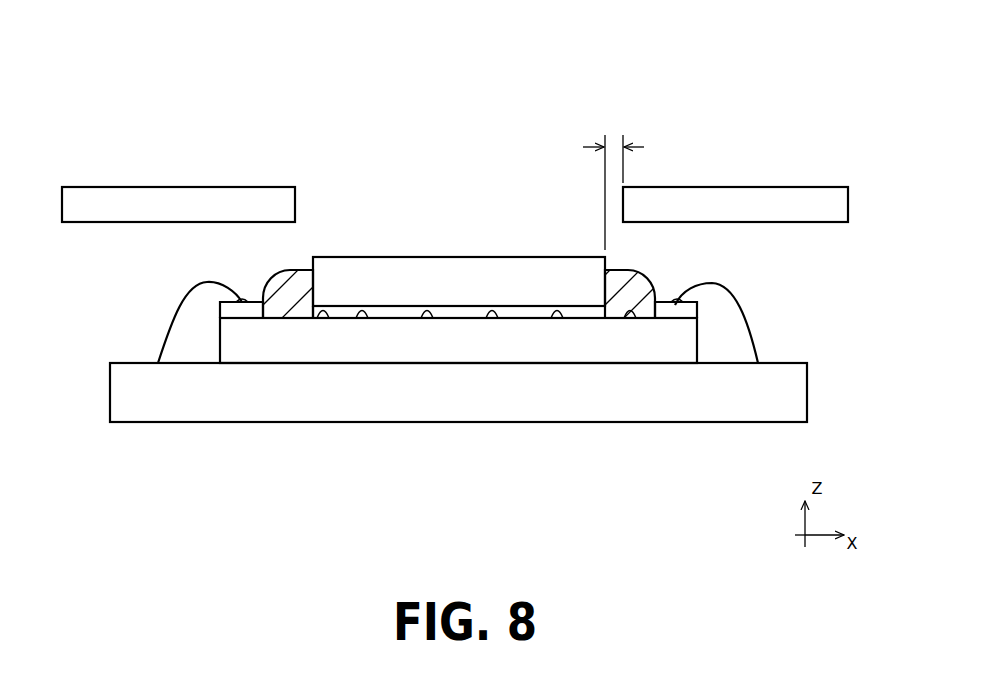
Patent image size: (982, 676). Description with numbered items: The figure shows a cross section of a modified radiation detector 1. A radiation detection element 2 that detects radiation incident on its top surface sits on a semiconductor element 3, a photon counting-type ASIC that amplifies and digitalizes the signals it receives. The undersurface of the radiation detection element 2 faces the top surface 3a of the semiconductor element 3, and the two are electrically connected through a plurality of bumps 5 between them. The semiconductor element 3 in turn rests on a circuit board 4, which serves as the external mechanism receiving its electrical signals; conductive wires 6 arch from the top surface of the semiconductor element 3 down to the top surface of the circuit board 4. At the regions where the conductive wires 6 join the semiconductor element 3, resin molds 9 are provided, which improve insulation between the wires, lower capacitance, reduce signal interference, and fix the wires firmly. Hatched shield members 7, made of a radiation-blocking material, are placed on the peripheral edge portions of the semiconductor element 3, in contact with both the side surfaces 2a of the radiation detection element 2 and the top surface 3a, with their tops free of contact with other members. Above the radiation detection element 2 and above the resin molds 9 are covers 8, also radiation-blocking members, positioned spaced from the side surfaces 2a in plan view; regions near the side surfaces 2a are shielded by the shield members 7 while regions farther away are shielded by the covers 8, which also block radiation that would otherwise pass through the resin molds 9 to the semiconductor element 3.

The radiation detector 1 is at (112, 92).
The radiation detection element 2 is at (435, 257).
The side surfaces 2a is at (303, 267).
The semiconductor element 3 is at (703, 355).
The top surface 3a is at (327, 317).
The circuit board 4 is at (302, 422).
The bumps 5 is at (487, 313).
The conductive wires 6 is at (173, 316).
The shield members 7 is at (290, 268).
The covers 8 is at (213, 187).
The resin molds 9 is at (242, 300).